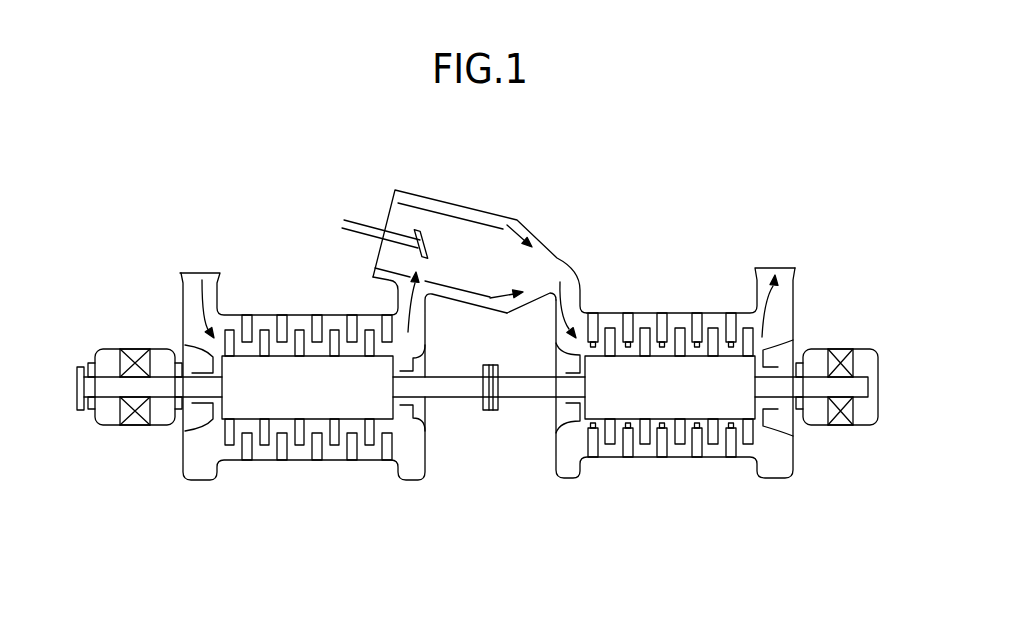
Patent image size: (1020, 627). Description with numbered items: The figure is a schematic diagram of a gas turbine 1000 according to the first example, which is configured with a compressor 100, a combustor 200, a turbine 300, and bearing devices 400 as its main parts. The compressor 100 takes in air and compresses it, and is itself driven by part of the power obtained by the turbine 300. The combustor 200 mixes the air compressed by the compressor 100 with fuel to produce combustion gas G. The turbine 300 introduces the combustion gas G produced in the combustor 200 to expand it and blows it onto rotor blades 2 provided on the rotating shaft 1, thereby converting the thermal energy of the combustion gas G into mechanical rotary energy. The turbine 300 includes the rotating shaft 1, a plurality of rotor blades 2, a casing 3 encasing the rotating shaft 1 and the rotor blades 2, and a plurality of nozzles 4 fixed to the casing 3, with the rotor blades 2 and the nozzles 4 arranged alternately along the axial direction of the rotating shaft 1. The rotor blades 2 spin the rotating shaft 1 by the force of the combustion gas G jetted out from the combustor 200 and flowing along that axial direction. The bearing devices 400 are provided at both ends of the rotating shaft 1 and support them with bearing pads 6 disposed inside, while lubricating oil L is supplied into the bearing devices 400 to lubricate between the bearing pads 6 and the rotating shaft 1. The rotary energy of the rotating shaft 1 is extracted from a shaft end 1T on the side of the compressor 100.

The gas turbine 1000 is at (647, 125).
The compressor 100 is at (428, 495).
The combustor 200 is at (565, 183).
The turbine 300 is at (675, 399).
The bearing devices 400 is at (120, 349).
The rotating shaft 1 is at (518, 398).
The shaft end 1T is at (80, 411).
The rotor blades 2 is at (747, 328).
The casing 3 is at (678, 313).
The nozzles 4 is at (662, 458).
The bearing pads 6 is at (137, 427).
The combustion gas G is at (562, 285).
The lubricating oil L is at (134, 340).